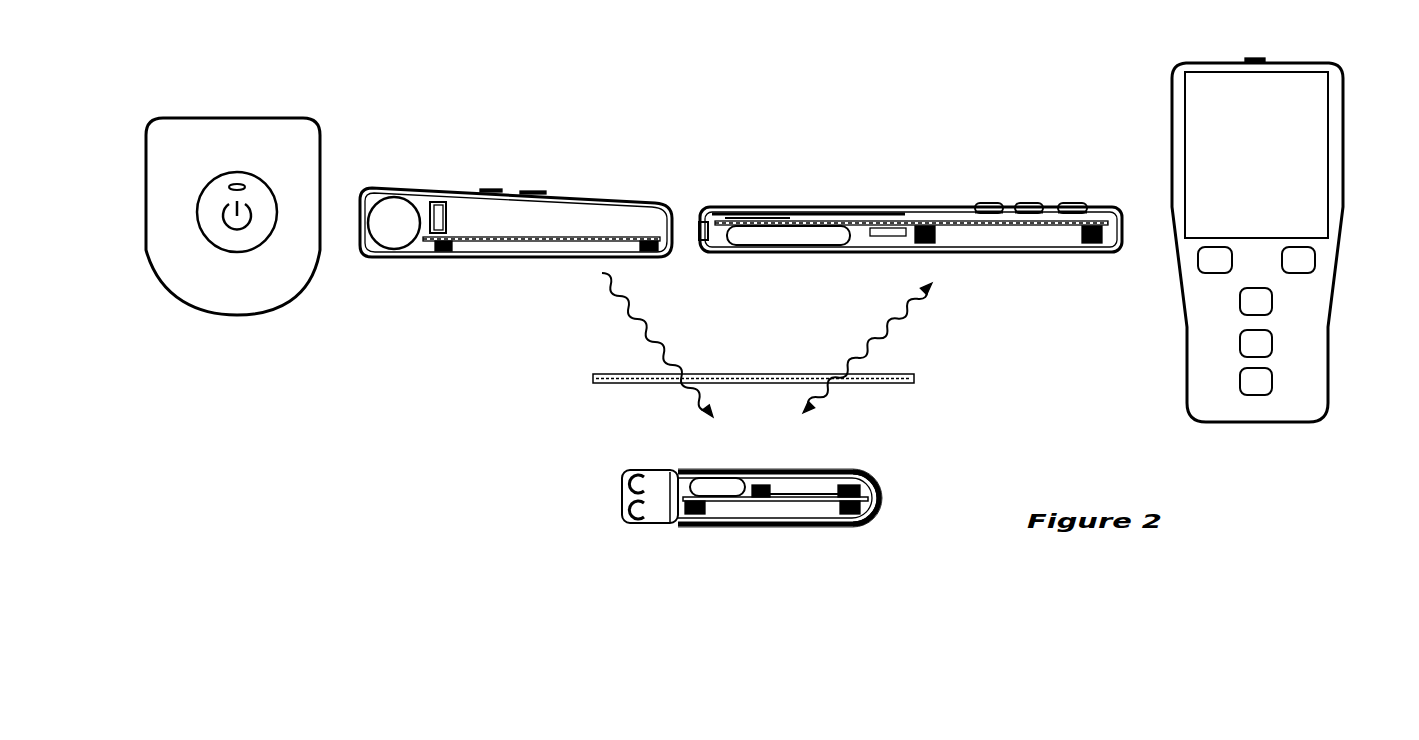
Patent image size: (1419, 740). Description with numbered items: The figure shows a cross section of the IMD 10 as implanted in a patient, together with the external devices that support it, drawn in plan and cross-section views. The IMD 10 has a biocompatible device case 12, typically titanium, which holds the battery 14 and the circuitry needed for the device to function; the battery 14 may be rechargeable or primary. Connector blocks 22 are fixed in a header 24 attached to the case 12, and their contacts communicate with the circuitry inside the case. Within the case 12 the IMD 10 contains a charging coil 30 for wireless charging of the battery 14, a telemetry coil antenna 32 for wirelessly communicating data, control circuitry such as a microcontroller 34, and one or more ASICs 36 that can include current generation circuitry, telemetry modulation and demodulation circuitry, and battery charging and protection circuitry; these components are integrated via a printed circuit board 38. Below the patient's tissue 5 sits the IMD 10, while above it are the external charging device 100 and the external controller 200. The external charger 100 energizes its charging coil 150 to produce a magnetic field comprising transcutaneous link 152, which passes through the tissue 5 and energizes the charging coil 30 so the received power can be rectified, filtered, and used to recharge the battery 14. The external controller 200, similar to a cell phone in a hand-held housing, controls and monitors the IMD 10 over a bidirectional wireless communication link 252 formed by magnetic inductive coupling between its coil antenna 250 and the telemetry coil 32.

The patient's tissue 5 is at (760, 374).
The IMD 10 is at (789, 485).
The device case 12 is at (734, 471).
The battery 14 is at (702, 482).
The connector blocks 22 is at (646, 484).
The header 24 is at (638, 470).
The charging coil 30 is at (695, 514).
The telemetry coil antenna 32 is at (763, 483).
The microcontroller 34 is at (790, 494).
The Application Specific Integrated Circuit 36 is at (823, 492).
The printed circuit board 38 is at (875, 492).
The external charging device 100 is at (414, 189).
The charging coil 150 is at (438, 252).
The transcutaneous link 152 is at (655, 349).
The external controller device 200 is at (1044, 221).
The coil antenna 250 is at (917, 225).
The bidirectional wireless communication link 252 is at (876, 339).